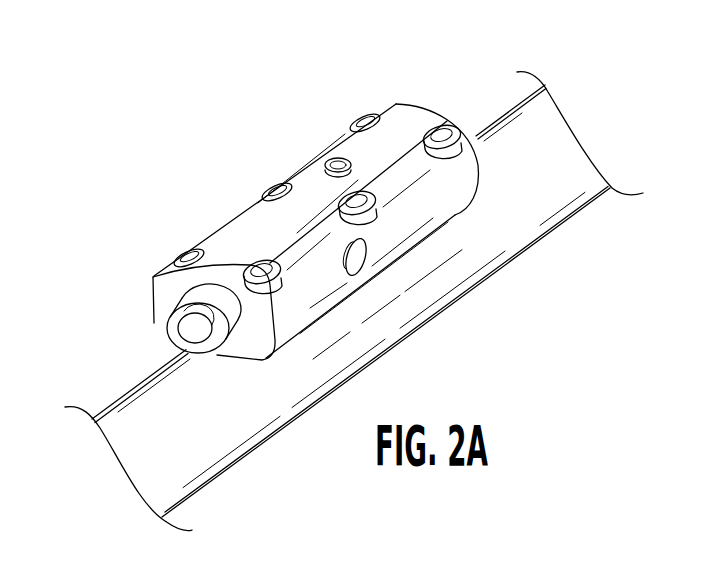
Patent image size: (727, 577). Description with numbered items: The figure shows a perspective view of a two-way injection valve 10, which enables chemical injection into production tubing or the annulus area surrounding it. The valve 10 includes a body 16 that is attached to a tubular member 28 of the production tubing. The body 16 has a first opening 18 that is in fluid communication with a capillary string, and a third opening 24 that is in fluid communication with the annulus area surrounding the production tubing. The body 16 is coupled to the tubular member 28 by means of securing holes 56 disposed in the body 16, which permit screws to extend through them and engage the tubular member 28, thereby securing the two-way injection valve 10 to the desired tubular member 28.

The two-way injection valve 10 is at (297, 95).
The body 16 is at (410, 121).
The first opening 18 is at (193, 326).
The third opening 24 is at (364, 259).
The tubular member 28 is at (552, 230).
The securing holes 56 is at (448, 136).